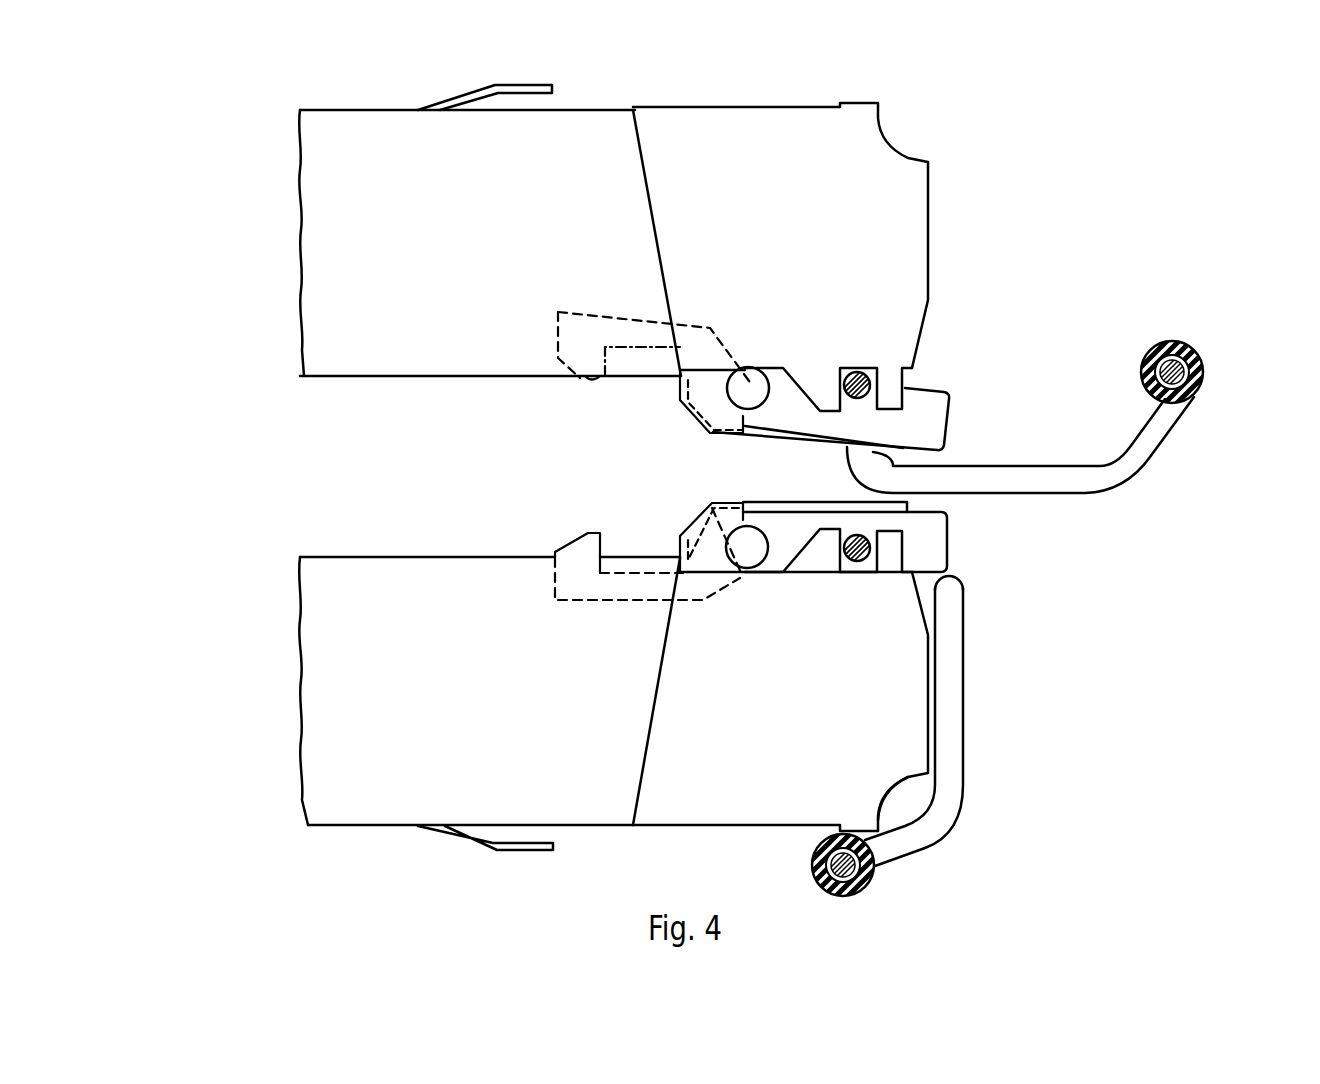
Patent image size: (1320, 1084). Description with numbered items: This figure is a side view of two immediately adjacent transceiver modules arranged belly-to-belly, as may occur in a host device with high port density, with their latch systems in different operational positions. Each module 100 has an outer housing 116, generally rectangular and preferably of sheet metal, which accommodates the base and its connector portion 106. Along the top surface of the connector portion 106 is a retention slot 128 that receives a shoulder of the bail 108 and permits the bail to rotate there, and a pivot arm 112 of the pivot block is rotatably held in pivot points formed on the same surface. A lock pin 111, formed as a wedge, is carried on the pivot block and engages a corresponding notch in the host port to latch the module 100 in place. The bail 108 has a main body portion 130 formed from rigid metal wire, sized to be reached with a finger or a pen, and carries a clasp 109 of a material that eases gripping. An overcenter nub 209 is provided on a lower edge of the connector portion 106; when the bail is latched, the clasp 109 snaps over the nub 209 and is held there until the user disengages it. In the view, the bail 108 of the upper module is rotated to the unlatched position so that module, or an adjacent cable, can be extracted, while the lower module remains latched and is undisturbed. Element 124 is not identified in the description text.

The module 100 is at (1030, 305).
The connector portion 106 is at (890, 222).
The bail 108 is at (1070, 463).
The clasp 109 is at (1197, 345).
The lock pin 111 is at (585, 357).
The pivot arm 112 is at (737, 383).
The outer housing 116 is at (367, 285).
The detent notches 124 is at (880, 393).
The retention slot 128 is at (937, 415).
The main body portion 130 is at (850, 371).
The nub 209 is at (890, 820).